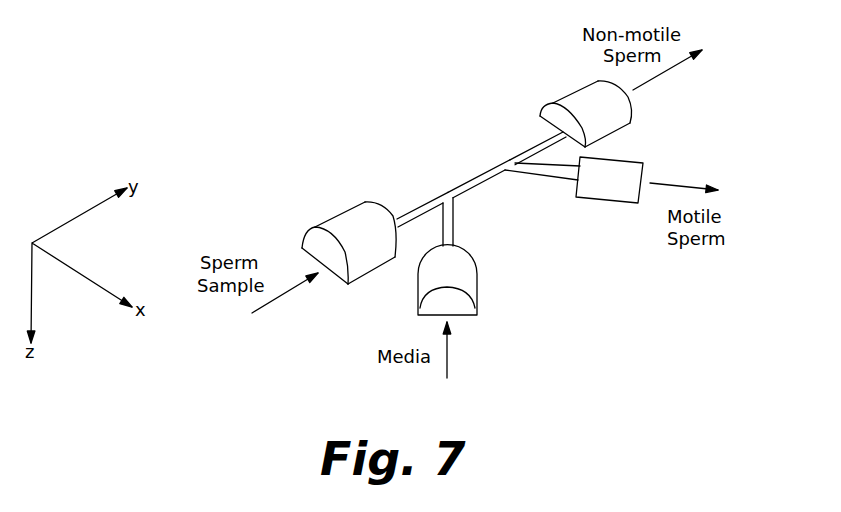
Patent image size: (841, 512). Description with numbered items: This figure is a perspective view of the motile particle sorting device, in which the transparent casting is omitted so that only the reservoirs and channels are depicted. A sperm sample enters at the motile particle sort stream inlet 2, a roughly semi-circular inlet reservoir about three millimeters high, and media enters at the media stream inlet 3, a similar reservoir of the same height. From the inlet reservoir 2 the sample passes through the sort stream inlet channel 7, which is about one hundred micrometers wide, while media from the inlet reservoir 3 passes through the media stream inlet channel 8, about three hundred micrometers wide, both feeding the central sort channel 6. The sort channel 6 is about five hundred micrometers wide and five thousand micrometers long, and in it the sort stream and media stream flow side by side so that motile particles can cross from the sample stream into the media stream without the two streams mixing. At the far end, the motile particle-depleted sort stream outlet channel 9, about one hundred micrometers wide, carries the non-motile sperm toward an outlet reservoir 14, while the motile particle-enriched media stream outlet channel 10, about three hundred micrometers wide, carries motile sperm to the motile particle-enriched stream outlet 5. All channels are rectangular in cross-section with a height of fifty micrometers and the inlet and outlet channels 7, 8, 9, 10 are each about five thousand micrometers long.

The motile particle sort stream inlet 2 is at (348, 220).
The media stream inlet 3 is at (467, 282).
The motile particle-enriched stream outlet 5 is at (607, 187).
The sort channel 6 is at (477, 178).
The sort stream inlet channel 7 is at (428, 202).
The media stream inlet channel 8 is at (452, 232).
The motile particle-depleted sort stream outlet channel 9 is at (527, 150).
The motile particle-enriched media stream outlet channel 10 is at (535, 175).
The non-motile sperm outlet chamber 14 is at (570, 98).